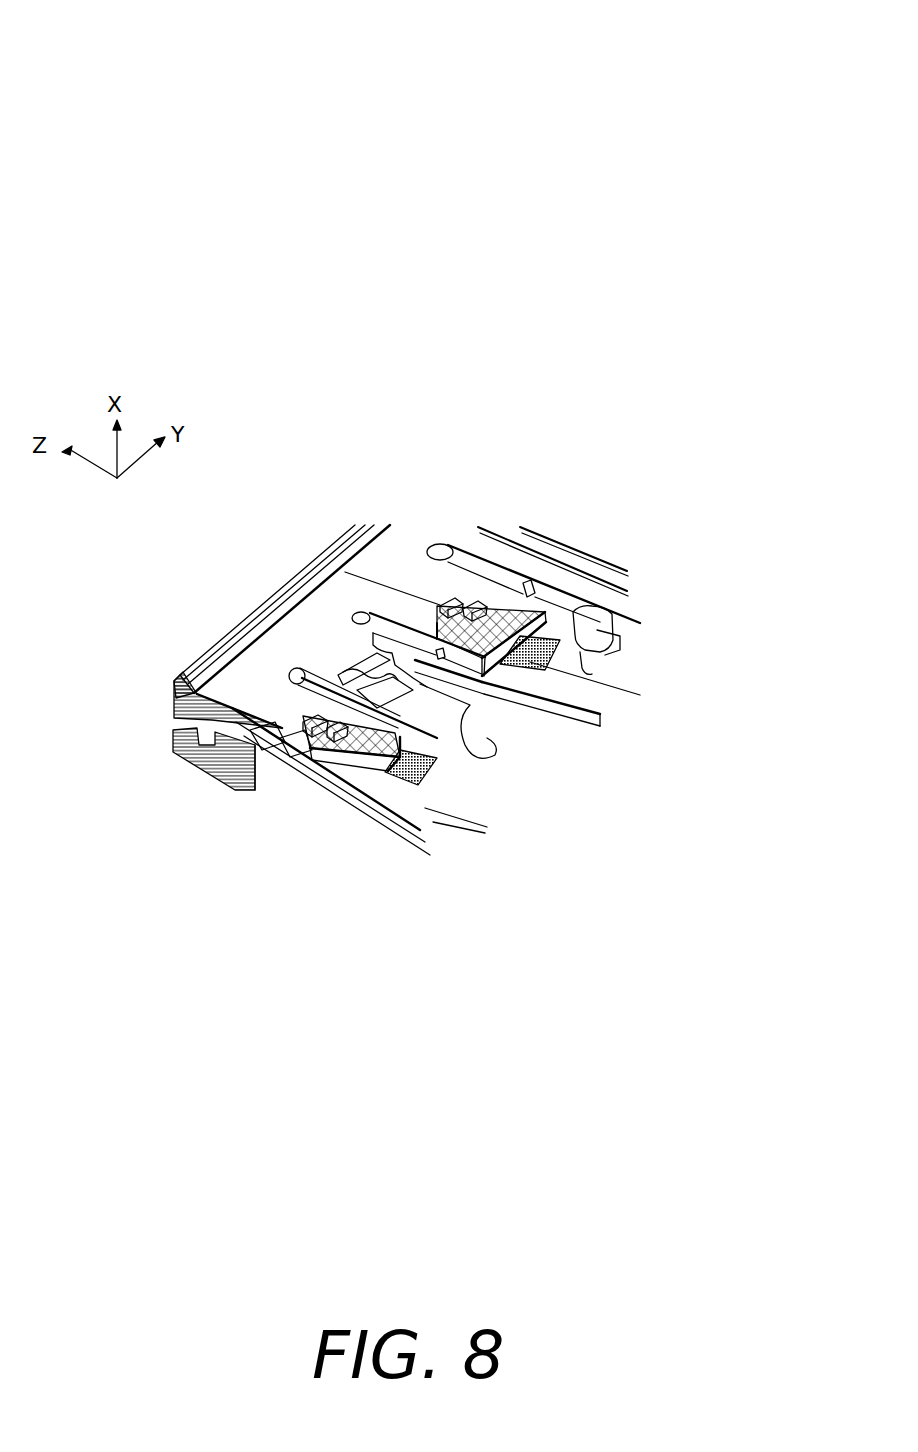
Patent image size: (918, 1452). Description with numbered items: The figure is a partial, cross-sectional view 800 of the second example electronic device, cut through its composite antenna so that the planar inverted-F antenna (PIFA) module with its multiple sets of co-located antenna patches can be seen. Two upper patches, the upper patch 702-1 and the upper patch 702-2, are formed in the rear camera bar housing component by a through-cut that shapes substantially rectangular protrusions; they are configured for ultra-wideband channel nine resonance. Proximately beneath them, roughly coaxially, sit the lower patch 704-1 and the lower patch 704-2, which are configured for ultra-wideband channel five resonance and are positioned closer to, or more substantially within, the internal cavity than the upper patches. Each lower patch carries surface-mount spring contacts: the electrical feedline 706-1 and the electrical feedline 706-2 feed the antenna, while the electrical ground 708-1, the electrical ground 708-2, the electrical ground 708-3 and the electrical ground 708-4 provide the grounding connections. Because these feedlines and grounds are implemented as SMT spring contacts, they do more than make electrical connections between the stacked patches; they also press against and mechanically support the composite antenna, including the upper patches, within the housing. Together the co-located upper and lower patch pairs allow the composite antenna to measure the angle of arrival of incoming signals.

The partial, cross-sectional view 800 is at (730, 48).
The upper patch 702-1 is at (437, 820).
The upper patch 702-2 is at (557, 678).
The lower patch 704-1 is at (453, 790).
The lower patch 704-2 is at (560, 657).
The electrical feedline 706-1 is at (340, 737).
The electrical feedline 706-2 is at (474, 613).
The electrical ground 708-1 is at (317, 727).
The electrical ground 708-2 is at (327, 735).
The electrical ground 708-3 is at (445, 613).
The electrical ground 708-4 is at (460, 613).